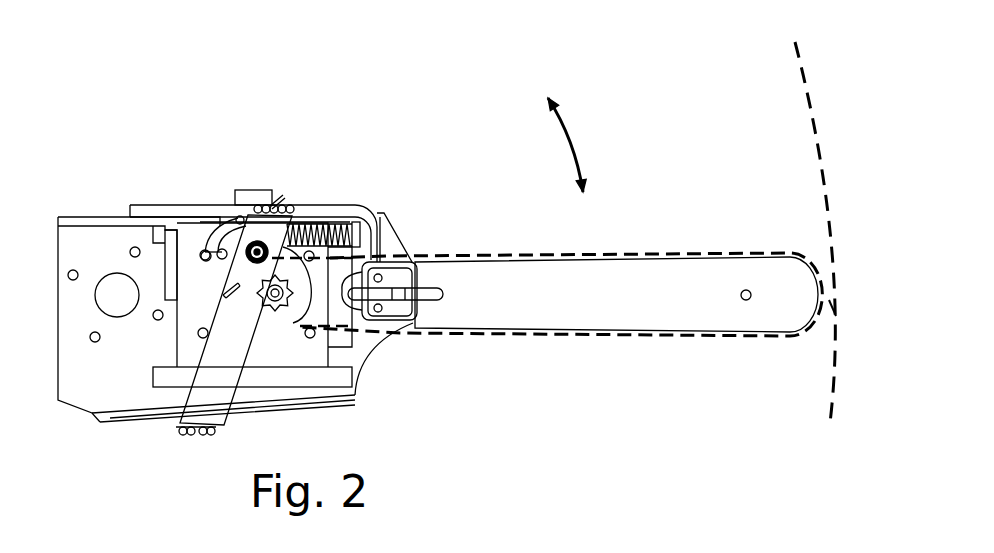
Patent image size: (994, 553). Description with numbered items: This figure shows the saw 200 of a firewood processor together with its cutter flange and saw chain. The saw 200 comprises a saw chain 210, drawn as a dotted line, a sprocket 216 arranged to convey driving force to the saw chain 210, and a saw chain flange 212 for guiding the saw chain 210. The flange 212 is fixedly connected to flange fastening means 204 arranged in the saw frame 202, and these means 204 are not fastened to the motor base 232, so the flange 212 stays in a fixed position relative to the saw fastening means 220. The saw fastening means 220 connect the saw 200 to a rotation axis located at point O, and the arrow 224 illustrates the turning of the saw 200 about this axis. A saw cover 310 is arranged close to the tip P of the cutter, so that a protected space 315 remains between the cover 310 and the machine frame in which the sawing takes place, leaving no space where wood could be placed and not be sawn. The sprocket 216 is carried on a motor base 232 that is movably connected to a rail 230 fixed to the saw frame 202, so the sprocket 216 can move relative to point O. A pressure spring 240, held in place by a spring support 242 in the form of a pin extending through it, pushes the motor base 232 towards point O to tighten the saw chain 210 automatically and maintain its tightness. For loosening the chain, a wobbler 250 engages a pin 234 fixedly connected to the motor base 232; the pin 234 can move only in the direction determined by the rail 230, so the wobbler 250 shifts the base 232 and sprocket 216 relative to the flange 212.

The saw 200 is at (315, 95).
The saw frame 202 is at (122, 395).
The saw fastening means 220 is at (103, 243).
The point O is at (117, 287).
The wobbler 250 is at (215, 208).
The pin 234 is at (220, 238).
The spring 240 is at (312, 216).
The spring support 242 is at (372, 222).
The sprocket 216 is at (300, 287).
The saw chain 210 is at (690, 255).
The saw chain flange 212 is at (683, 303).
The protected space 315 is at (692, 135).
The arrow 224 is at (567, 147).
The saw cover 310 is at (803, 73).
The tip P is at (832, 308).
The motor base 232 is at (312, 353).
The flange fastening means 204 is at (417, 320).
The rail 230 is at (325, 377).